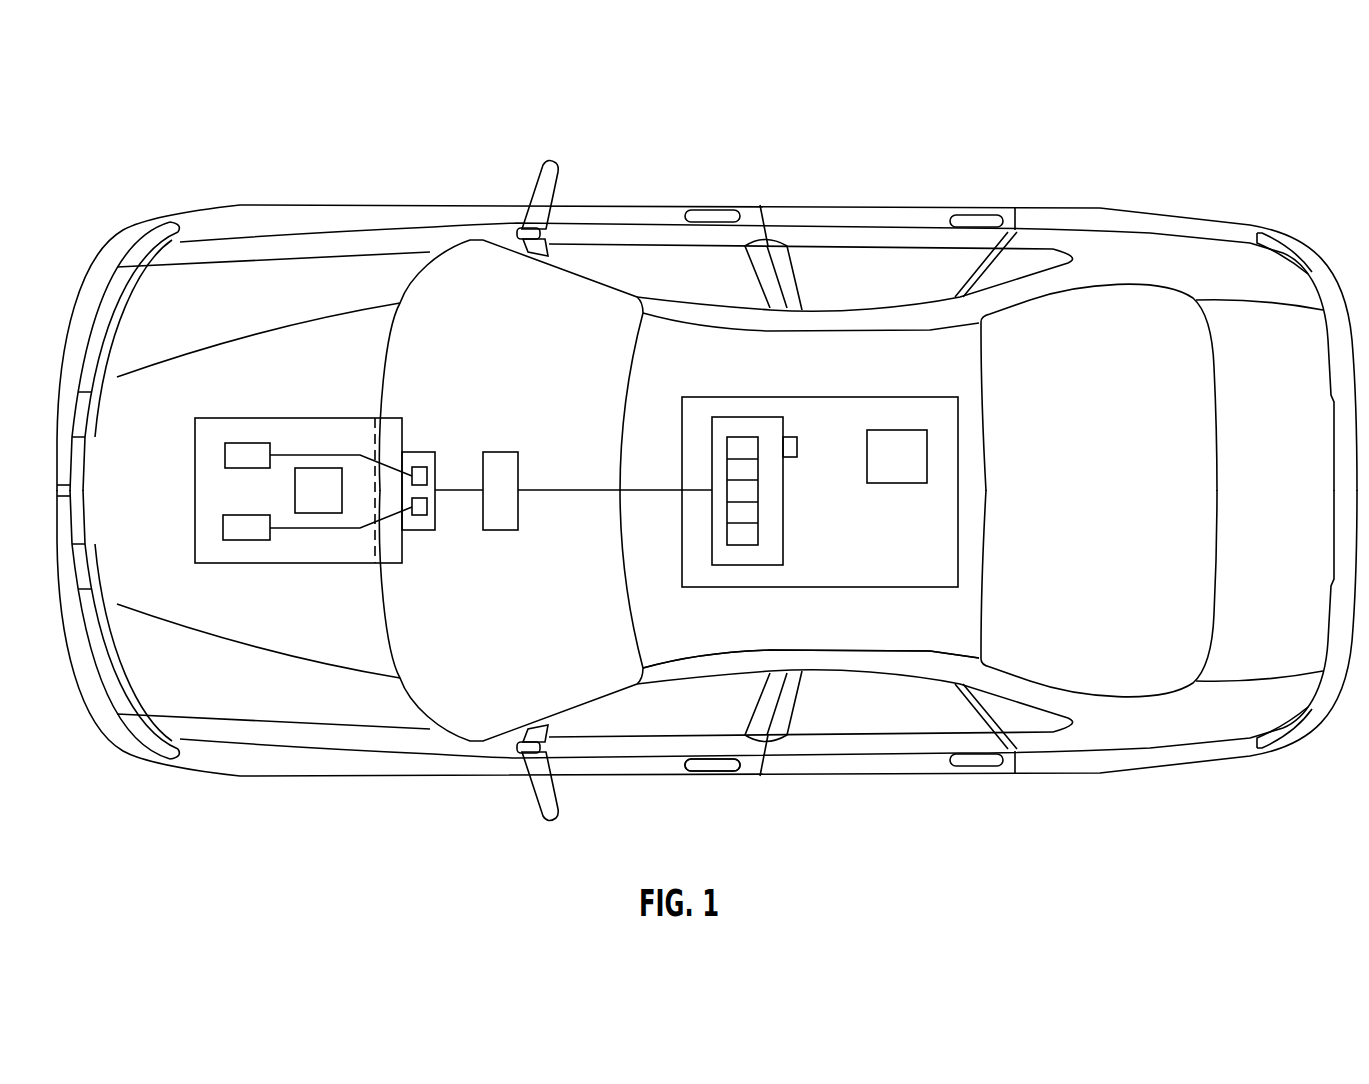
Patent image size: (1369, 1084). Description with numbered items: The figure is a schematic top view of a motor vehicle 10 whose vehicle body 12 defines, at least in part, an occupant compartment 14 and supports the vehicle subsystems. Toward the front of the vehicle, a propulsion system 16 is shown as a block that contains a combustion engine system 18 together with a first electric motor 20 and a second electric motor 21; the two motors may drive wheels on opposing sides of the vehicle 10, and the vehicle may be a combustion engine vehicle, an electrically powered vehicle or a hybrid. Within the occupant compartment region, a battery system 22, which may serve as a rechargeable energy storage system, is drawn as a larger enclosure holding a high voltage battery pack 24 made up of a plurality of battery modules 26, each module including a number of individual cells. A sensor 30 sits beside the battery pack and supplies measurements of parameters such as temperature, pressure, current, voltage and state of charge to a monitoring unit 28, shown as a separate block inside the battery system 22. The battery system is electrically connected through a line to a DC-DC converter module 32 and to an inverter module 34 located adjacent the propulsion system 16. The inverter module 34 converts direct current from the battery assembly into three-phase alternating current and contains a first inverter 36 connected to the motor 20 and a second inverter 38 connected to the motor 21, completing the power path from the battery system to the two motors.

The motor vehicle 10 is at (108, 111).
The vehicle body 12 is at (772, 196).
The occupant compartment 14 is at (848, 660).
The propulsion system 16 is at (195, 490).
The combustion engine system 18 is at (313, 468).
The first electric motor 20 is at (245, 443).
The second electric motor 21 is at (243, 541).
The battery system 22 is at (710, 587).
The high voltage battery pack 24 is at (745, 417).
The battery modules 26 is at (758, 533).
The monitoring unit 28 is at (898, 430).
The sensor 30 is at (797, 445).
The DC-DC converter module 32 is at (518, 465).
The inverter module 34 is at (405, 451).
The first inverter 36 is at (428, 477).
The second inverter 38 is at (430, 505).